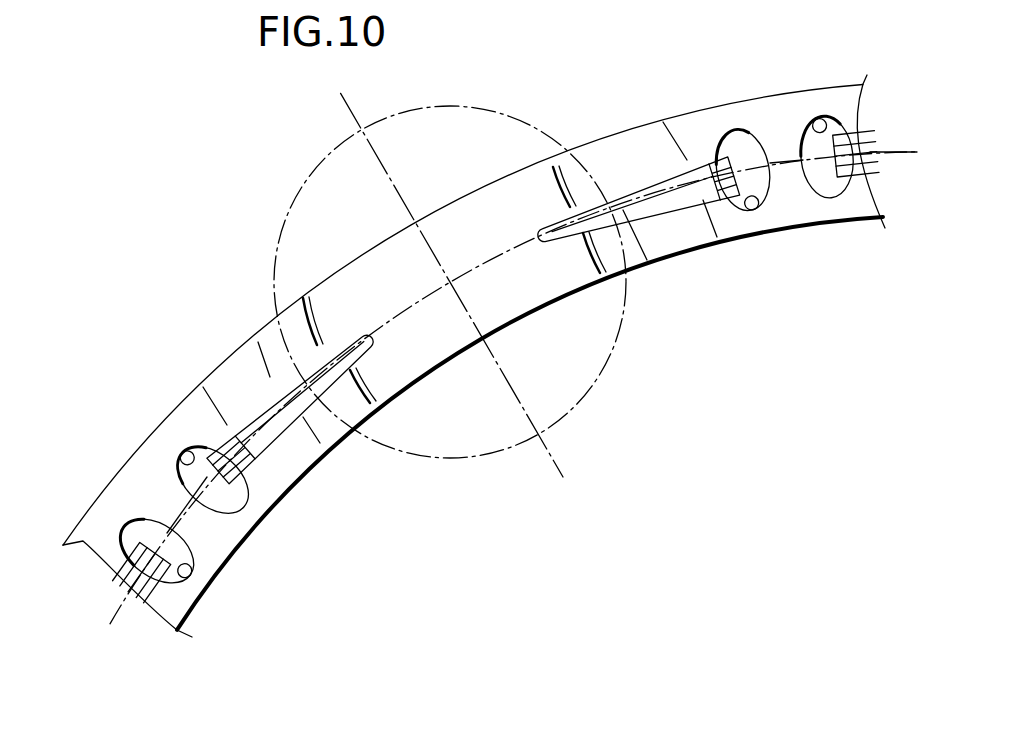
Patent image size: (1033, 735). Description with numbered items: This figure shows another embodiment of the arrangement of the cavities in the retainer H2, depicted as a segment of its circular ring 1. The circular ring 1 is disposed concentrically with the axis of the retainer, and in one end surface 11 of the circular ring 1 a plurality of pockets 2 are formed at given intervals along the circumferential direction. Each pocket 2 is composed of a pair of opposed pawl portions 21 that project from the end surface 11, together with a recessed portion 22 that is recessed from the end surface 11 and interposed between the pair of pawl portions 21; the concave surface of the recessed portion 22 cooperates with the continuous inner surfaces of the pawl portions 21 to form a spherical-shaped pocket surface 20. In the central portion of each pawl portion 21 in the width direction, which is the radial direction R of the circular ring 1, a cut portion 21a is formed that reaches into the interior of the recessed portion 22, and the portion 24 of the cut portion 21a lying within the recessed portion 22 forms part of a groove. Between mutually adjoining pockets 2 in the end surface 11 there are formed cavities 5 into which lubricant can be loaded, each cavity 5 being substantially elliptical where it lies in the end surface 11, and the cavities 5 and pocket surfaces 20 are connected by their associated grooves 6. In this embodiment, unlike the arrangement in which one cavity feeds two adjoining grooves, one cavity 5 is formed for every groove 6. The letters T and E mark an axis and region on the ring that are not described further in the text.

The circular ring 1 is at (145, 617).
The pocket 2 is at (507, 195).
The pocket surface 20 is at (236, 383).
The cavity 5 is at (198, 447).
The groove 6 is at (117, 553).
The end surface 11 is at (817, 215).
The pawl portion 21 is at (288, 318).
The cut portion 21a is at (268, 398).
The recessed portion 22 is at (443, 343).
The portion of the cut portion 24 is at (288, 432).
The region T is at (436, 100).
The radial direction R is at (560, 458).
The axis E is at (905, 140).
The retainer H2 is at (762, 78).